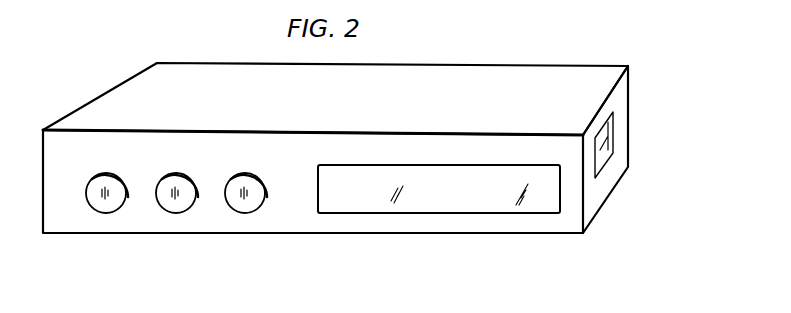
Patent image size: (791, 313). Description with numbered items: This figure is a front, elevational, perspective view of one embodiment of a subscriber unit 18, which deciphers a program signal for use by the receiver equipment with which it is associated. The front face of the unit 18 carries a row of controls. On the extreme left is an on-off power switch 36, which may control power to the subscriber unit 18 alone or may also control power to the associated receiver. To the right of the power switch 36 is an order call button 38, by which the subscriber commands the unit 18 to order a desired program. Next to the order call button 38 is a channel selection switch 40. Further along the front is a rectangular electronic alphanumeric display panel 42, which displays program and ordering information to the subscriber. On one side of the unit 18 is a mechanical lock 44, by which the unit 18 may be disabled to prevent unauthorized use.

The subscriber unit 18 is at (560, 73).
The on-off power switch 36 is at (104, 212).
The order call button 38 is at (175, 211).
The channel selection switch 40 is at (245, 211).
The electronic alphanumeric display panel 42 is at (382, 213).
The mechanical lock 44 is at (598, 147).